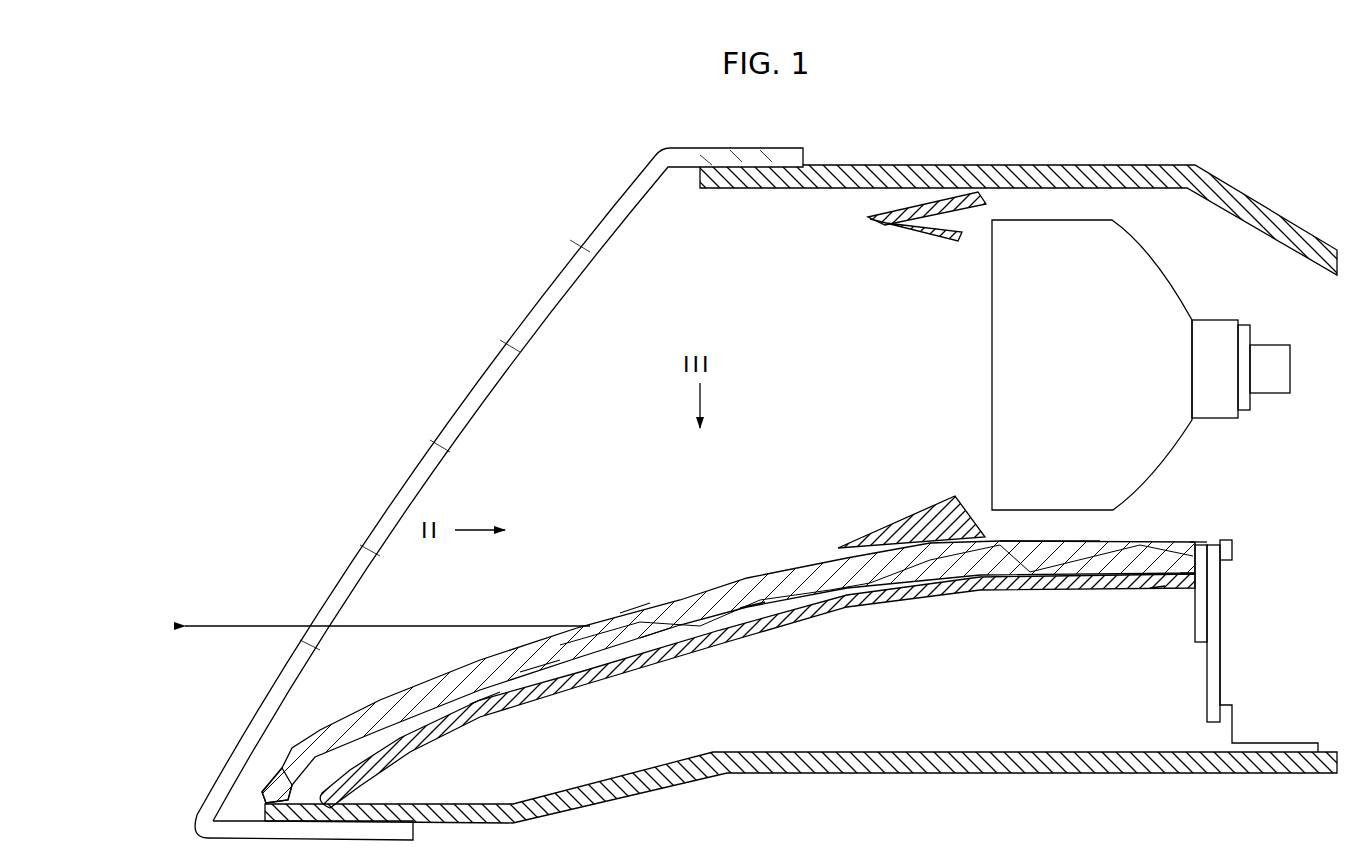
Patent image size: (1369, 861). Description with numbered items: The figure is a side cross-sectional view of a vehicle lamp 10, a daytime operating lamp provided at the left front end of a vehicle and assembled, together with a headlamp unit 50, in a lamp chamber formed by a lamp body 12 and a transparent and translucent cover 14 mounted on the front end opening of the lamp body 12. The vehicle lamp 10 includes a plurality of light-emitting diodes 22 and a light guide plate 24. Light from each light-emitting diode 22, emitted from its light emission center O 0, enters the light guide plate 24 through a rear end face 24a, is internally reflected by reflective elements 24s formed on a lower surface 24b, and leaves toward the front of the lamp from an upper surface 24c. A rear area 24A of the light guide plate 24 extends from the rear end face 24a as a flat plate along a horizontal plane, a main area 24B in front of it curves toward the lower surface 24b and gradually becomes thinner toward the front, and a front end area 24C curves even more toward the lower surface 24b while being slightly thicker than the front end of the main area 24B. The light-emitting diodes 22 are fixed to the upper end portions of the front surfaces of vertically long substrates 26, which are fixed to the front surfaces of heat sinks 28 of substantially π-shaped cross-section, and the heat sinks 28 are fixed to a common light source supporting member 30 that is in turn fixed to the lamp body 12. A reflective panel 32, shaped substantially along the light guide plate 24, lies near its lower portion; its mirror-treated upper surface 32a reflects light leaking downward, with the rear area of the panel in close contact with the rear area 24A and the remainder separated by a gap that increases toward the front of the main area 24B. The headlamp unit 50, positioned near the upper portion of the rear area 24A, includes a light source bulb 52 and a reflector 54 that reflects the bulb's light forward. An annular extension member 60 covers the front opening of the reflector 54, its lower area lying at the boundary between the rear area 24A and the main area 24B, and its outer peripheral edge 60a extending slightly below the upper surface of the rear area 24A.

The vehicle lamp 10 is at (452, 577).
The lamp body 12 is at (1222, 183).
The transparent and translucent cover 14 is at (520, 315).
The light-emitting diodes 22 is at (1194, 538).
The light guide plate 24 is at (737, 580).
The rear area of the light guide plate 24A is at (1045, 548).
The main area of the light guide plate 24B is at (753, 603).
The rear end face of the light guide plate 24a is at (1200, 573).
The lower surface of the light guide plate 24b is at (655, 640).
The upper surface of the light guide plate 24c is at (633, 612).
The front end area of the light guide plate 24C is at (268, 777).
The reflective elements 24s is at (548, 667).
The substrates 26 is at (1202, 618).
The heat sinks 28 is at (1213, 655).
The light source supporting member 30 is at (1270, 742).
The reflective panel 32 is at (863, 610).
The upper surface of the reflective panel 32a is at (487, 705).
The headlamp unit 50 is at (966, 317).
The light source bulb 52 is at (1268, 387).
The reflector 54 is at (1157, 282).
The extension member 60 is at (862, 215).
The outer peripheral edge of the extension member 60a is at (843, 548).
The light emission center 0 is at (1153, 590).